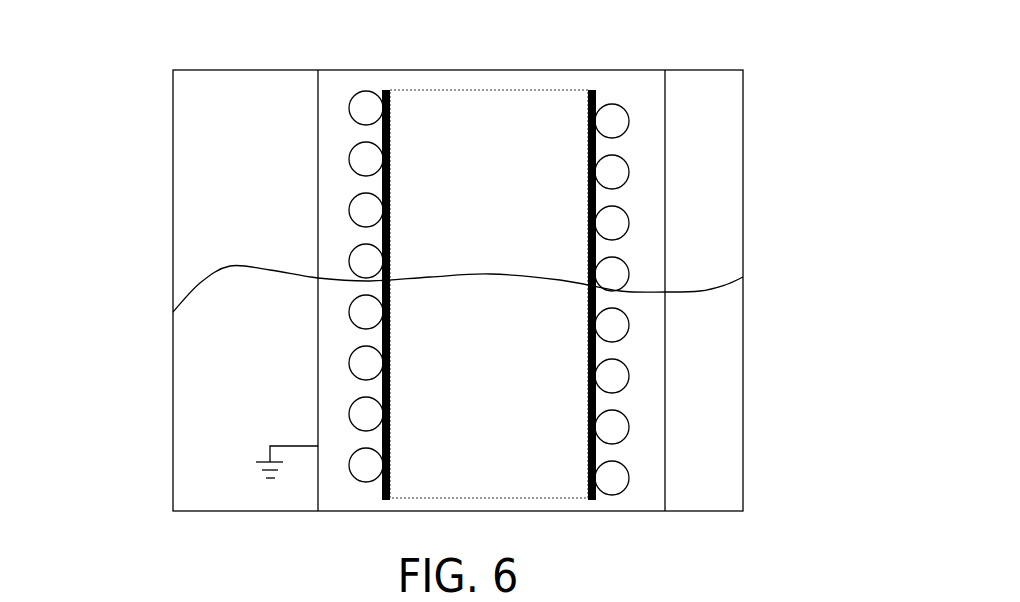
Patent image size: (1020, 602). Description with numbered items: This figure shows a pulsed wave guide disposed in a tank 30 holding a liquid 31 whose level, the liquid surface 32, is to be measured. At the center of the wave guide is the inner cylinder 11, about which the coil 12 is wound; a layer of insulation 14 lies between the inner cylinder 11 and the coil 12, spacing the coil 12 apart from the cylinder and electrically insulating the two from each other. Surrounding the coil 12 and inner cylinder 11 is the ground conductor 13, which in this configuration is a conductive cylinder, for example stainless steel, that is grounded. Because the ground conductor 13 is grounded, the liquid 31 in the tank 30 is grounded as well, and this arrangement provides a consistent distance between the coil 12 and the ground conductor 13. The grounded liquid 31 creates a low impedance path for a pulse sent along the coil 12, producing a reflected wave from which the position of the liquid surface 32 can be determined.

The inner cylinder 11 is at (489, 294).
The coil 12 is at (630, 188).
The ground conductor 13 is at (318, 347).
The insulation 14 is at (603, 132).
The tank 30 is at (744, 238).
The liquid 31 is at (263, 441).
The liquid surface 32 is at (707, 293).